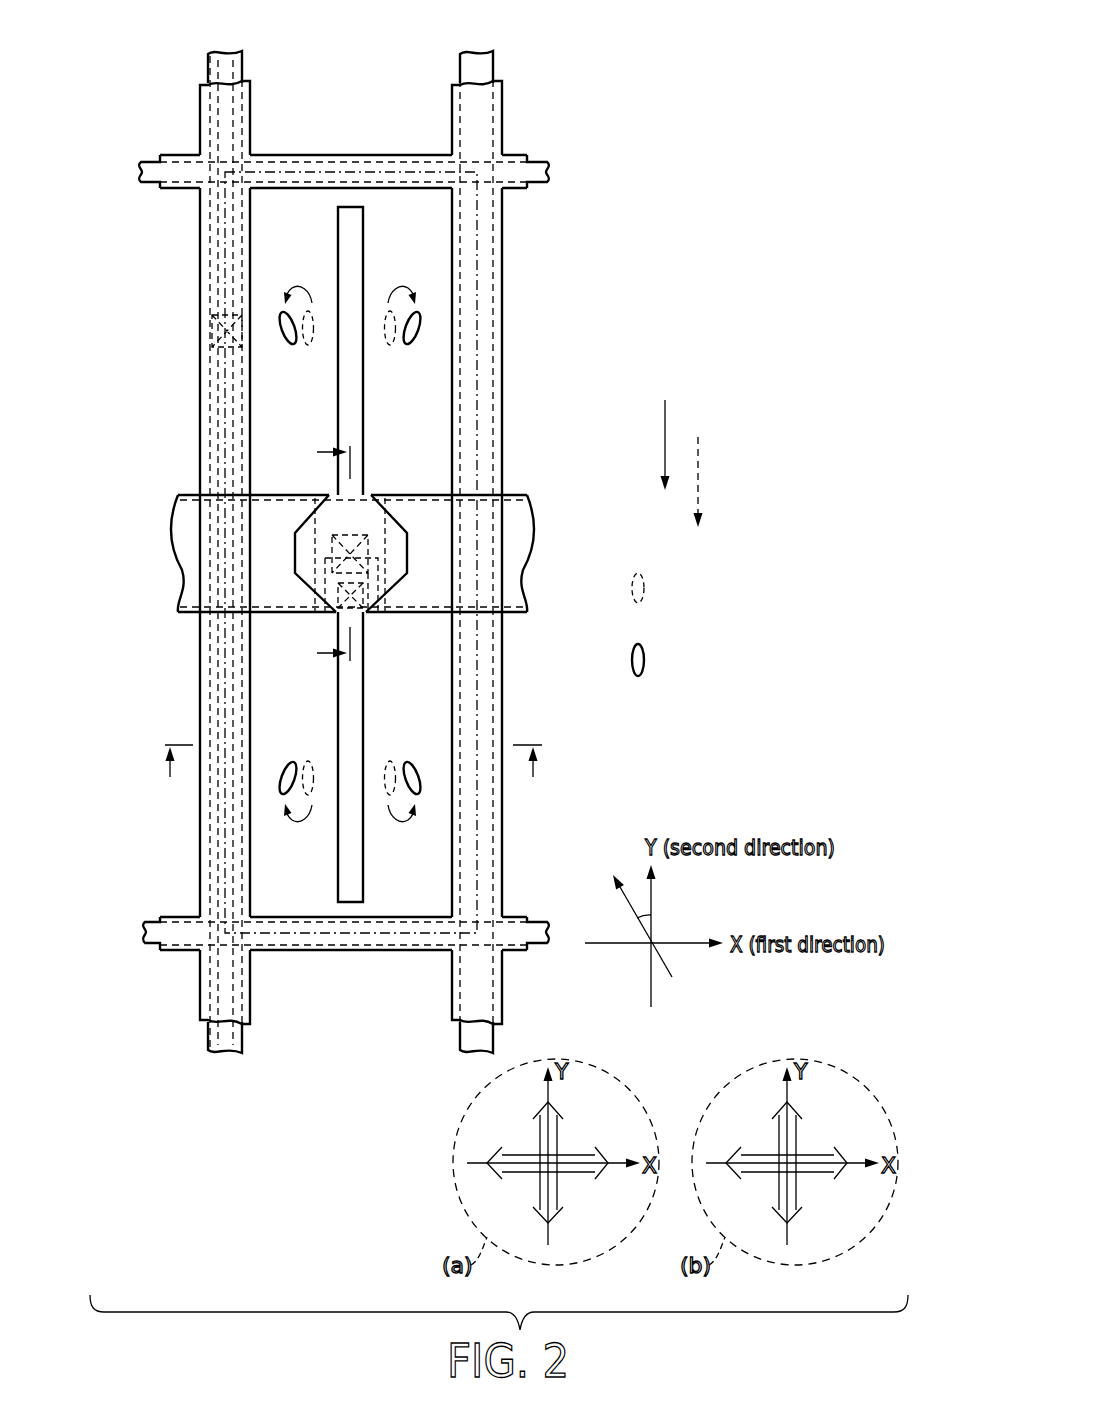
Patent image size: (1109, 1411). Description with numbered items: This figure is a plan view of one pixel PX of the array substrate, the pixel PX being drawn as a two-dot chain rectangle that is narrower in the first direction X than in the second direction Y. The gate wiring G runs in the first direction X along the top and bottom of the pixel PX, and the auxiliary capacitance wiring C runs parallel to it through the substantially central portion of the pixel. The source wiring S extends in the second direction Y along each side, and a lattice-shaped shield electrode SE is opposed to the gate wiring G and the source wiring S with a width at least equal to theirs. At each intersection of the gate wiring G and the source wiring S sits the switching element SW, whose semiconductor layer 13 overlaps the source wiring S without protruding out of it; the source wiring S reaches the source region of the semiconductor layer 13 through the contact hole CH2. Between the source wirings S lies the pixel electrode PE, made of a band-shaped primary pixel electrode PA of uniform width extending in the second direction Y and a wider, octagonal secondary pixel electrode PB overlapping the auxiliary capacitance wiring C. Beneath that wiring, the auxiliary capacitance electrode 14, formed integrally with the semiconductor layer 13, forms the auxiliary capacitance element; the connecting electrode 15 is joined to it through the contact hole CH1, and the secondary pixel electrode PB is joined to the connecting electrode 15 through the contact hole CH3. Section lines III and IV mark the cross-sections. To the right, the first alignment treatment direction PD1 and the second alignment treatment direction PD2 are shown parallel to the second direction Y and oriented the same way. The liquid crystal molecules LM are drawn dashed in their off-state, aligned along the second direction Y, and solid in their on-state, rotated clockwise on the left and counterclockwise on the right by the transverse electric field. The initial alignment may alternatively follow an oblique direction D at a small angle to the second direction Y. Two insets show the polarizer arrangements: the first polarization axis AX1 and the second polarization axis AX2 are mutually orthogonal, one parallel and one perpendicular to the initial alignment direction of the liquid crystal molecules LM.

The source wiring S is at (222, 62).
The shield electrode SE is at (502, 681).
The gate wiring G is at (138, 172).
The auxiliary capacitance wiring C is at (178, 565).
The pixel PX is at (486, 164).
The switching element SW is at (295, 552).
The semiconductor layer 13 is at (217, 282).
The contact hole CH2 is at (212, 331).
The pixel electrode PE is at (421, 554).
The primary pixel electrode PA is at (338, 433).
The secondary pixel electrode PB is at (371, 493).
The connecting electrode 15 is at (317, 502).
The auxiliary capacitance electrode 14 is at (285, 610).
The contact hole CH3 is at (350, 554).
The contact hole CH1 is at (358, 612).
The section line III is at (317, 452).
The section line IV is at (170, 770).
The liquid crystal molecules LM is at (582, 553).
The first alignment treatment direction PD1 is at (665, 413).
The second alignment treatment direction PD2 is at (698, 450).
The initial alignment direction D is at (626, 903).
The first polarization axis AX1 is at (584, 1178).
The second polarization axis AX2 is at (558, 1125).